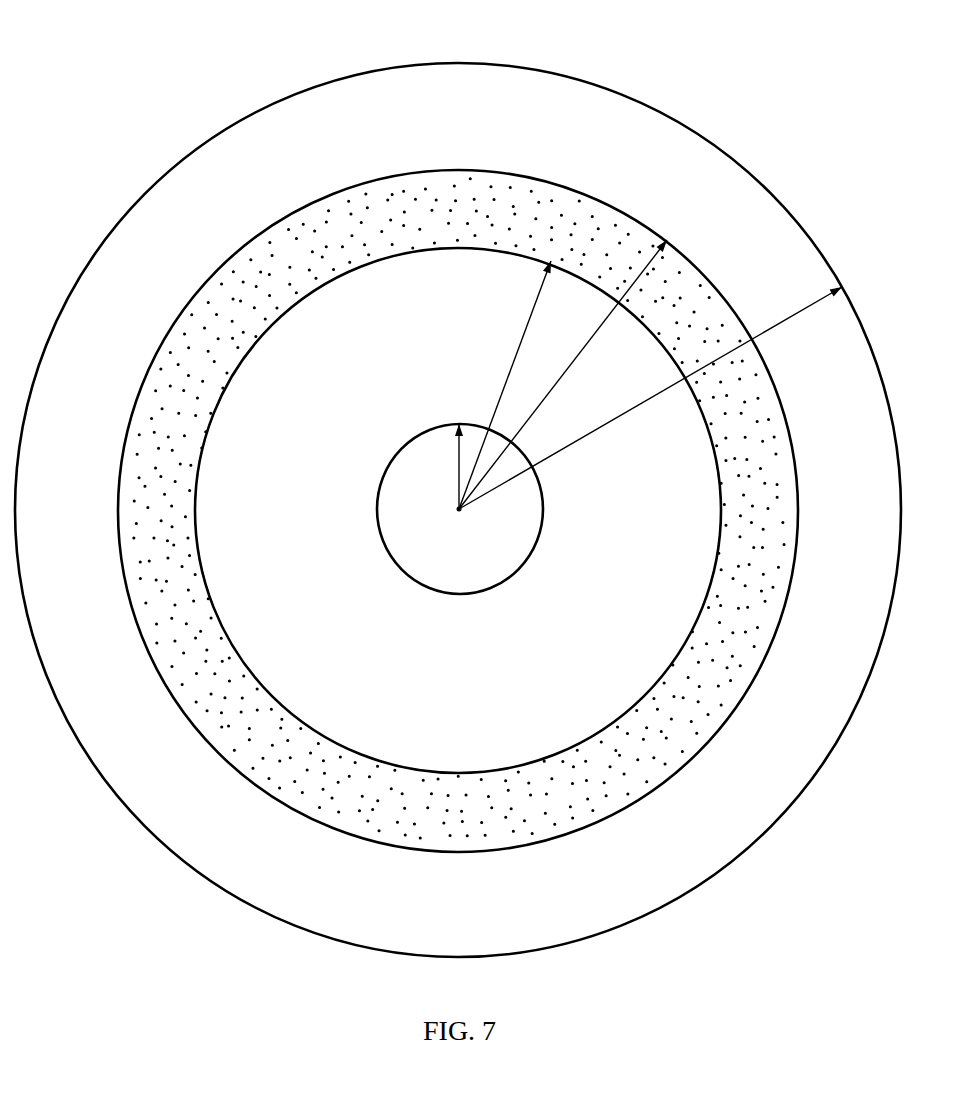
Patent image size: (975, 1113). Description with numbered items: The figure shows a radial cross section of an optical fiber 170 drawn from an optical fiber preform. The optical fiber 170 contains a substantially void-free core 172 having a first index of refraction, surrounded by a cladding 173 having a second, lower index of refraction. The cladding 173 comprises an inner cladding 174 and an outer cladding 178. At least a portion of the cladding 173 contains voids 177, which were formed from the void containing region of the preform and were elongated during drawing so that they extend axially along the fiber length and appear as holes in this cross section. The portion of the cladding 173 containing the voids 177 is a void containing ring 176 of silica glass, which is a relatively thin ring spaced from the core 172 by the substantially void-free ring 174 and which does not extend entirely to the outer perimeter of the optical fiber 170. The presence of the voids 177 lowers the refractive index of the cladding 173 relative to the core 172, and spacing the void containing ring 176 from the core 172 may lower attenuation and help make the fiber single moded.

The optical fiber 170 is at (147, 118).
The core 172 is at (481, 561).
The cladding 173 is at (17, 471).
The inner cladding 174 is at (481, 689).
The void containing ring 176 is at (481, 830).
The voids 177 is at (692, 742).
The outer cladding 178 is at (481, 919).